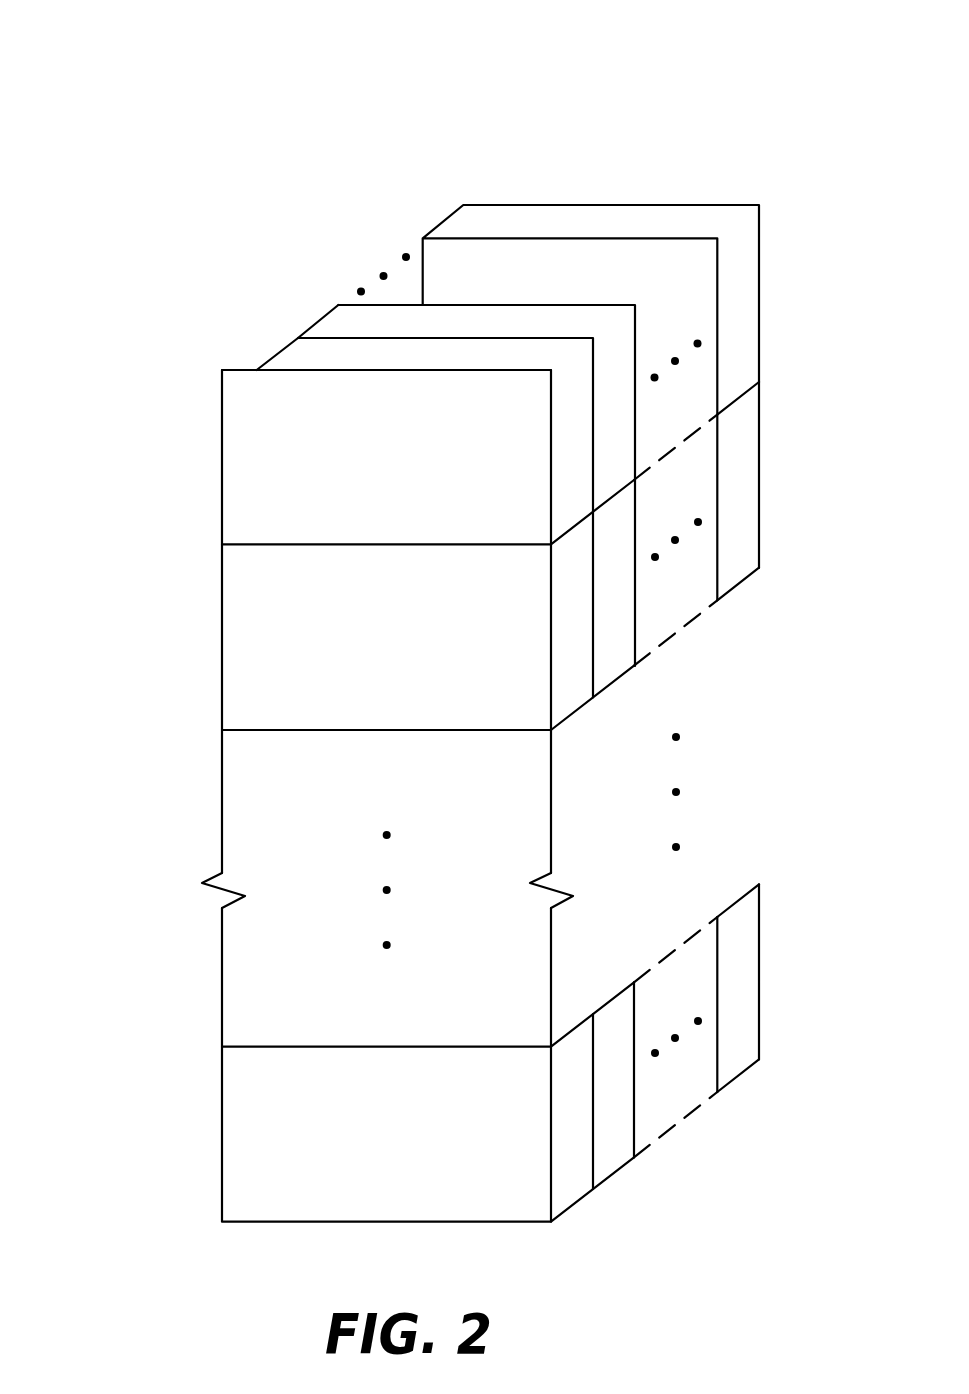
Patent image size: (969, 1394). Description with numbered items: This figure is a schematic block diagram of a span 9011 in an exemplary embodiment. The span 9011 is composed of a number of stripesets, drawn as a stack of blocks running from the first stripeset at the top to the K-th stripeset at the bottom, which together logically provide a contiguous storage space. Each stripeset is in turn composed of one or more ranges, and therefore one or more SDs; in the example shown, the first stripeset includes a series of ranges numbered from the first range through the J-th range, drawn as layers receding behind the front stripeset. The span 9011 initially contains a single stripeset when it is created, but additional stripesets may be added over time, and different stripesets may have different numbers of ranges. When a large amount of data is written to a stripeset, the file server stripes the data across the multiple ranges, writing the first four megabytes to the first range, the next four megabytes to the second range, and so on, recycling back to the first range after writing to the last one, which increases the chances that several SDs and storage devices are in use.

The span 9011 is at (608, 60).